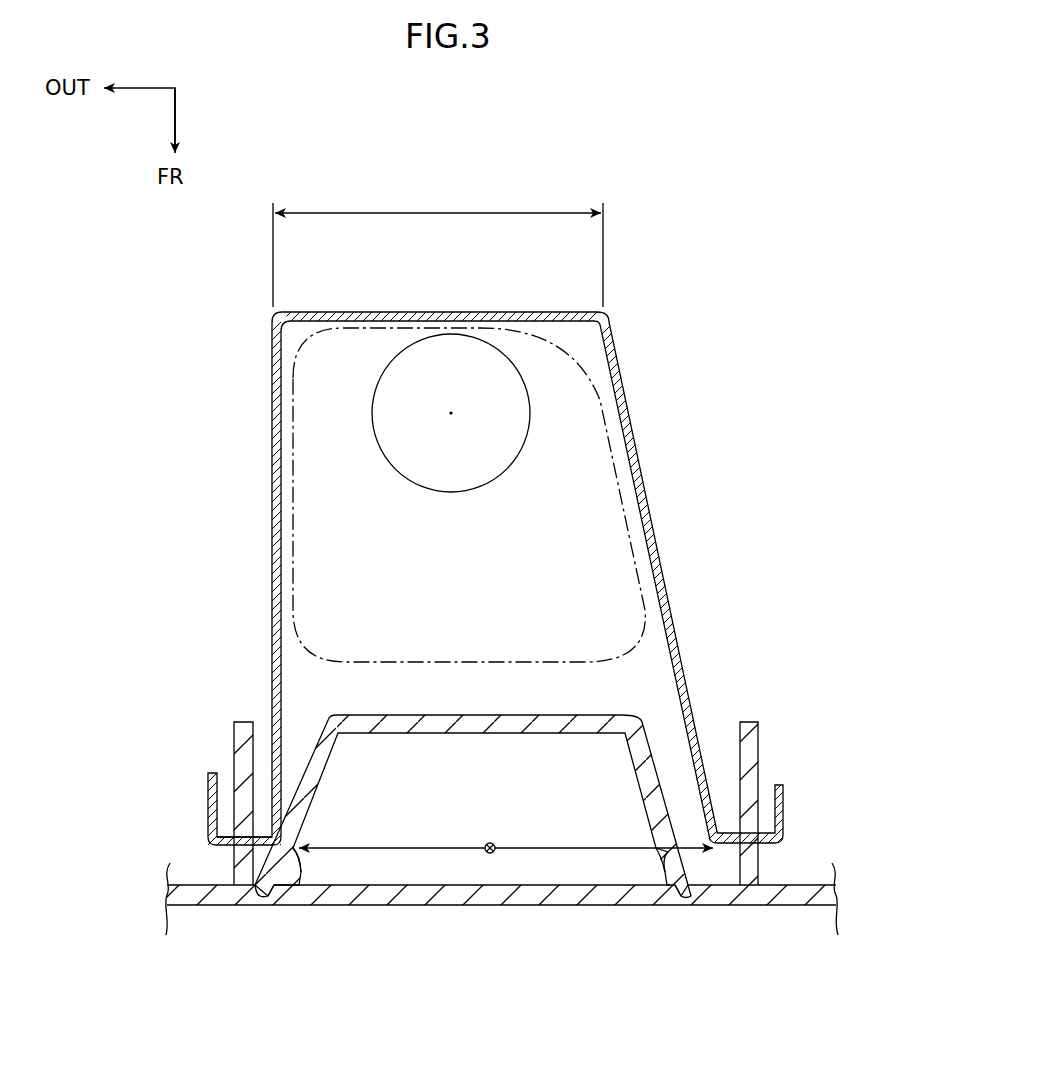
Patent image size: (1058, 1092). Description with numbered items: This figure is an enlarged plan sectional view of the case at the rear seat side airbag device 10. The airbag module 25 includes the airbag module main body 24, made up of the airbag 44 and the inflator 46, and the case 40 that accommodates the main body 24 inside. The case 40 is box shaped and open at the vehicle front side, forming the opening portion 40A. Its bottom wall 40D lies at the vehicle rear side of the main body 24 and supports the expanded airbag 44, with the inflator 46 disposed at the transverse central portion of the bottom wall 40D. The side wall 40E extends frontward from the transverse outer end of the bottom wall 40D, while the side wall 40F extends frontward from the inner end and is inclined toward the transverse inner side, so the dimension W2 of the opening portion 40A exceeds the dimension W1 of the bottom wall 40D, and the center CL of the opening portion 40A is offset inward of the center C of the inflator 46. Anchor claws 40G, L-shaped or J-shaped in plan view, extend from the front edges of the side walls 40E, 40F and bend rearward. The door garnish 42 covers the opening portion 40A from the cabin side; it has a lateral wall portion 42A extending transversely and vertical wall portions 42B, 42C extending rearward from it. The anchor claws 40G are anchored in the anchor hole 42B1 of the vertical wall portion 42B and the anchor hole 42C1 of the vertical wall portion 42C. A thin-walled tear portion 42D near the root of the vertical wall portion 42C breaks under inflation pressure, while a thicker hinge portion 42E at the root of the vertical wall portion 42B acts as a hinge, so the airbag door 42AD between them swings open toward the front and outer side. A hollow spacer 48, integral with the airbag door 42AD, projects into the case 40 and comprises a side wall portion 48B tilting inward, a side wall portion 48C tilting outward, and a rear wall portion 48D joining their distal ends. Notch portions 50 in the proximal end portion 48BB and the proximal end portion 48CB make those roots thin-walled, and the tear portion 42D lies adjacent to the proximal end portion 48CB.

The rear seat side airbag device 10 is at (731, 307).
The airbag module main body 24 is at (593, 362).
The airbag module 25 is at (656, 422).
The case 40 is at (502, 533).
The opening portion 40A is at (716, 828).
The bottom wall 40D is at (420, 312).
The side wall 40E is at (271, 515).
The side wall 40F is at (643, 495).
The anchor claw 40G is at (208, 795).
The door garnish 42 is at (513, 809).
The lateral wall portion 42A is at (195, 905).
The airbag door 42AD is at (457, 905).
The vertical wall portion 42B is at (190, 745).
The anchor hole 42B1 is at (238, 797).
The vertical wall portion 42C is at (812, 794).
The anchor hole 42C1 is at (758, 808).
The tear portion 42D is at (712, 882).
The hinge portion 42E is at (258, 837).
The airbag 44 is at (510, 663).
The inflator 46 is at (500, 470).
The spacer 48 is at (498, 797).
The side wall portion 48B is at (313, 831).
The proximal end portion 48BB is at (293, 884).
The side wall portion 48C is at (680, 836).
The proximal end portion 48CB is at (660, 905).
The rear wall portion 48D is at (407, 715).
The notch portion 50 is at (303, 862).
The center of the inflator C is at (451, 418).
The vehicle transverse direction center CL is at (493, 843).
The dimension of the bottom wall W1 is at (441, 213).
The dimension of the opening portion W2 is at (450, 847).